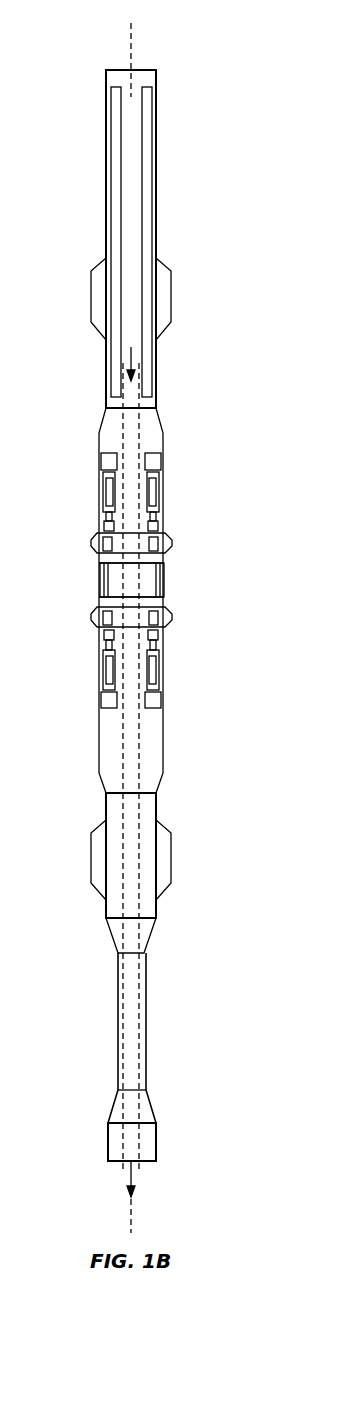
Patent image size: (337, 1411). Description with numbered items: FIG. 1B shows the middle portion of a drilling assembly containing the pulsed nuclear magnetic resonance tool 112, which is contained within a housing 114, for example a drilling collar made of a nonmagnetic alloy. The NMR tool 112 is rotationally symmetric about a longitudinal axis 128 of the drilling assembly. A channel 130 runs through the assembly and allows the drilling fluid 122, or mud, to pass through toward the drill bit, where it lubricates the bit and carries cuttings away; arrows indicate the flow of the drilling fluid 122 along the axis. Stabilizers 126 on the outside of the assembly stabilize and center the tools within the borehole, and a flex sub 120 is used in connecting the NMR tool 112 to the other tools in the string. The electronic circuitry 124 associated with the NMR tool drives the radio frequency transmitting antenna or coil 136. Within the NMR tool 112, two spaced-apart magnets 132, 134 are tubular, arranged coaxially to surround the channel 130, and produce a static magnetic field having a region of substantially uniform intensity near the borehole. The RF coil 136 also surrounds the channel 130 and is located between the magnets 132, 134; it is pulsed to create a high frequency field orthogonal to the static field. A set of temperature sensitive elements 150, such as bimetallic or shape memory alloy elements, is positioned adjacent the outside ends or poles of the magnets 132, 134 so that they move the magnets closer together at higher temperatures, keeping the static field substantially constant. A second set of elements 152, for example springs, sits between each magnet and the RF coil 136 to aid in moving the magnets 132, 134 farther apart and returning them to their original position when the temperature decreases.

The pulsed nuclear magnetic resonance tool 112 is at (197, 561).
The housing 114 is at (164, 770).
The flex sub 120 is at (134, 1080).
The drilling fluid 122 is at (128, 396).
The electronic circuitry 124 is at (114, 359).
The stabilizers 126 is at (97, 300).
The longitudinal axis 128 is at (129, 50).
The channel 130 is at (132, 900).
The magnet 132 is at (152, 493).
The magnet 134 is at (153, 668).
The RF transmitting antenna or coil 136 is at (105, 582).
The temperature sensitive elements 150 is at (108, 462).
The second set of elements 152 is at (104, 520).